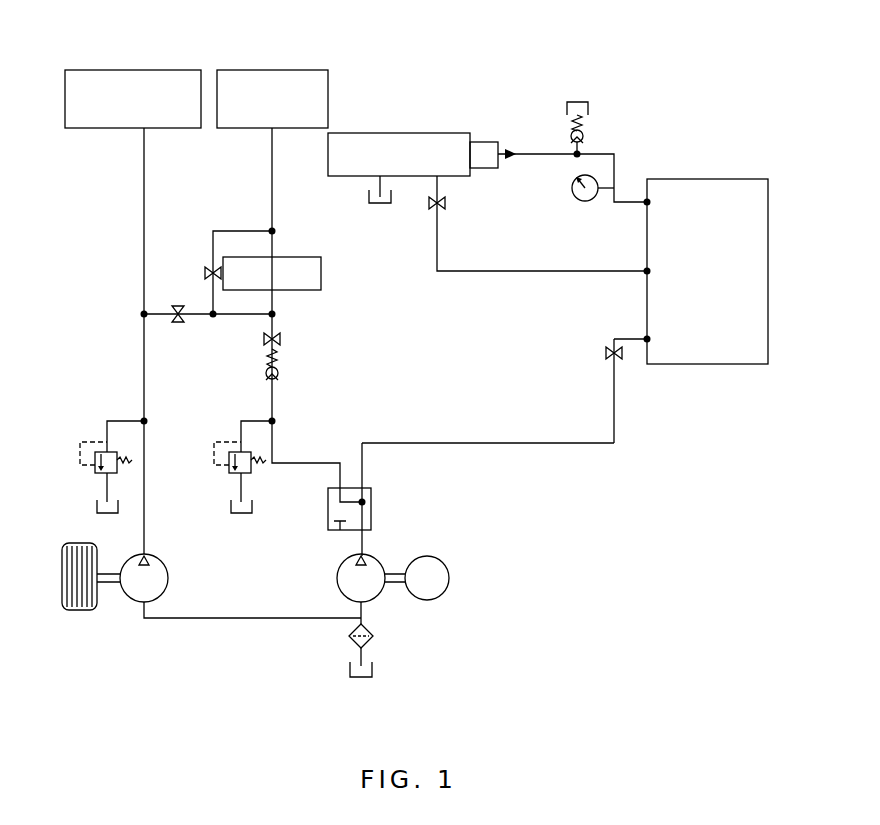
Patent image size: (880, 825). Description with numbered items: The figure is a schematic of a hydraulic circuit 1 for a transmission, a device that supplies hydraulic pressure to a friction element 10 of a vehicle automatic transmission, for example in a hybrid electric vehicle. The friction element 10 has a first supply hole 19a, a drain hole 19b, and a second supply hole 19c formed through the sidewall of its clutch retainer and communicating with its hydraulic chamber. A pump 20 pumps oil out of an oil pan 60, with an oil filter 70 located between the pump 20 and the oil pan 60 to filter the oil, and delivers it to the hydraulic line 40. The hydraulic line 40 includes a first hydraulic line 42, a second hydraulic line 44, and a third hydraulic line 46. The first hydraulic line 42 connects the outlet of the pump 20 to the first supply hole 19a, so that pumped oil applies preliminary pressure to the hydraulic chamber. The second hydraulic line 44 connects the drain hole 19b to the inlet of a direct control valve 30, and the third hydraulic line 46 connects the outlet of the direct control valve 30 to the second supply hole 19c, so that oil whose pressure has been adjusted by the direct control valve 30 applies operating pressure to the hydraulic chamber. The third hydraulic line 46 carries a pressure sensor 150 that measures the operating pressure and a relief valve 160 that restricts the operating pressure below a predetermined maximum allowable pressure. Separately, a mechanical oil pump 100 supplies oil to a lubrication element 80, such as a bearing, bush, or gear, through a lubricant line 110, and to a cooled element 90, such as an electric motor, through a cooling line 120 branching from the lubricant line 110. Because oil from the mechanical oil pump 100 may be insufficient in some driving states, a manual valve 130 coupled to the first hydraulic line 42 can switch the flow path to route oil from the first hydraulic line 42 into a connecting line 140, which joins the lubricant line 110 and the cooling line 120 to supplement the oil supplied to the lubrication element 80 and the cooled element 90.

The hydraulic circuit for a transmission 1 is at (52, 25).
The friction element 10 is at (736, 179).
The first supply hole 19a is at (646, 343).
The drain hole 19b is at (645, 274).
The second supply hole 19c is at (645, 205).
The pump 20 is at (337, 578).
The direct control valve 30 is at (437, 133).
The hydraulic line 40 is at (574, 463).
The first hydraulic line 42 is at (471, 444).
The second hydraulic line 44 is at (541, 272).
The third hydraulic line 46 is at (614, 154).
The oil pan 60 is at (350, 671).
The oil filter 70 is at (349, 637).
The lubrication element 80 is at (184, 70).
The cooled element 90 is at (310, 70).
The mechanical oil pump 100 is at (169, 578).
The lubricant line 110 is at (144, 353).
The cooling line 120 is at (272, 178).
The manual valve 130 is at (372, 509).
The connecting line 140 is at (274, 401).
The pressure sensor 150 is at (571, 188).
The relief valve 160 is at (577, 102).